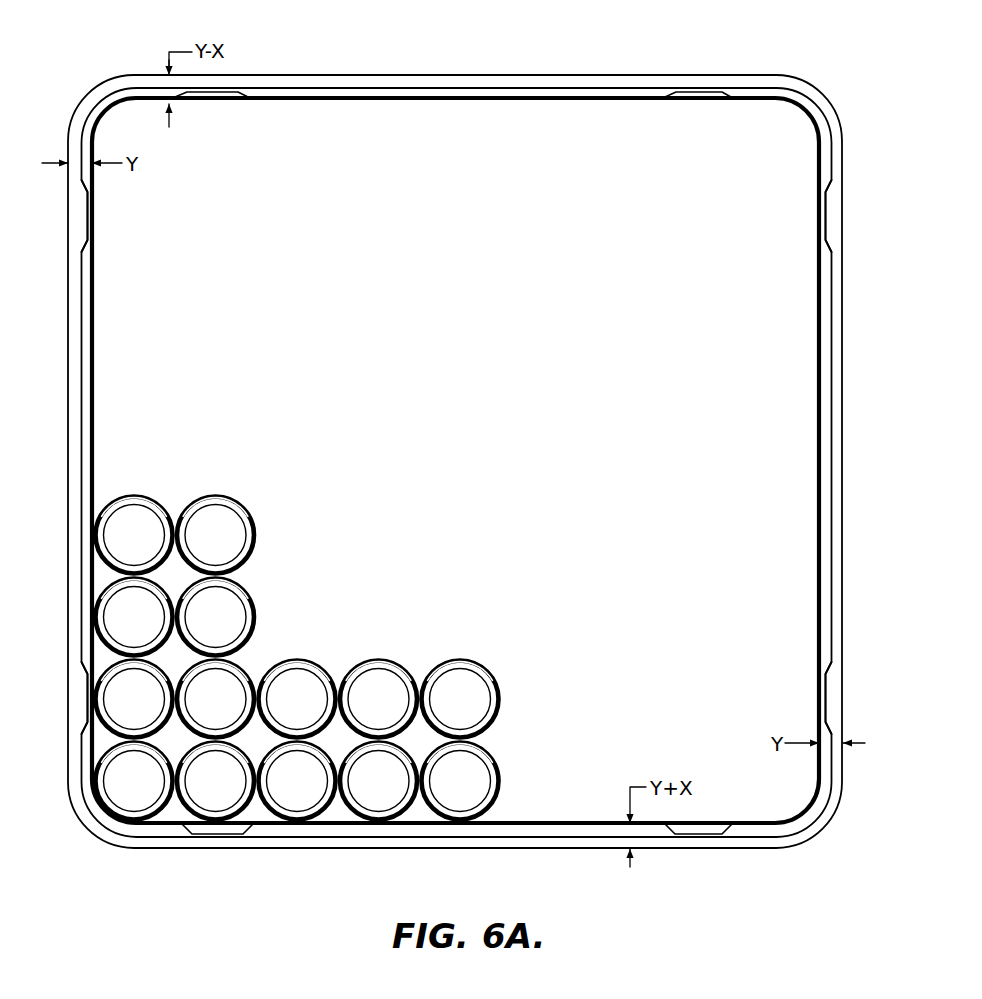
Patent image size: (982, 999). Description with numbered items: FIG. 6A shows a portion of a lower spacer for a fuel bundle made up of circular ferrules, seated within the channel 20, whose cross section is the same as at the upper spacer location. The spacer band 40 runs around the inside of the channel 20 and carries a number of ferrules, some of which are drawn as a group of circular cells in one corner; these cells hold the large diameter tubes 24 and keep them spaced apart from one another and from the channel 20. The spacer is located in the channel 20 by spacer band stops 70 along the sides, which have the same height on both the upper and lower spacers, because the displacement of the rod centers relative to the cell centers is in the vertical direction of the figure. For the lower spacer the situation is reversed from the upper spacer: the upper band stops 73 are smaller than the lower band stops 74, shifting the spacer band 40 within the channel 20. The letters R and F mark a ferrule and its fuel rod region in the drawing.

The channel 20 is at (836, 505).
The large diameter tubes 24 is at (314, 658).
The spacer band 40 is at (818, 536).
The spacer band stops 70 is at (85, 216).
The upper band stops 73 is at (215, 96).
The lower band stops 74 is at (224, 830).
The ring R is at (462, 696).
The flange F is at (477, 684).